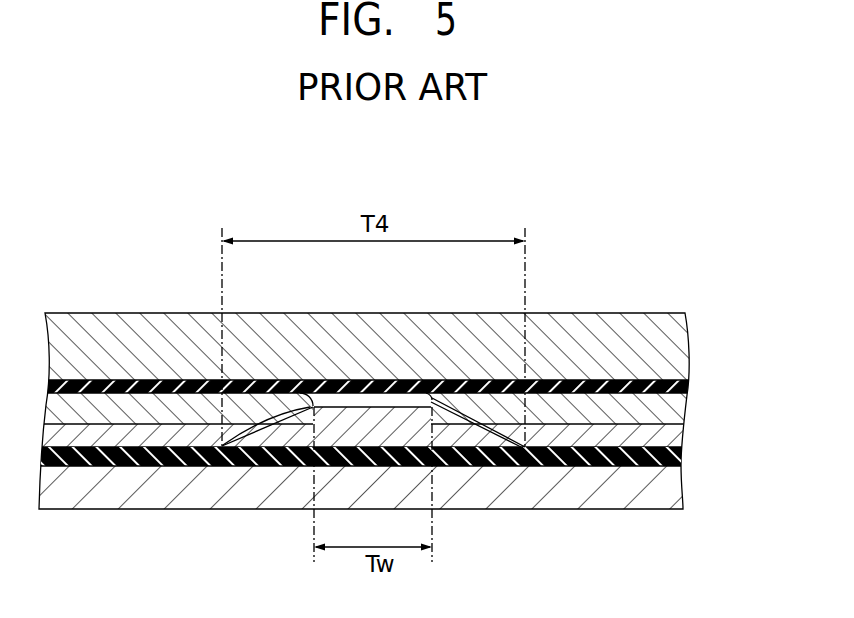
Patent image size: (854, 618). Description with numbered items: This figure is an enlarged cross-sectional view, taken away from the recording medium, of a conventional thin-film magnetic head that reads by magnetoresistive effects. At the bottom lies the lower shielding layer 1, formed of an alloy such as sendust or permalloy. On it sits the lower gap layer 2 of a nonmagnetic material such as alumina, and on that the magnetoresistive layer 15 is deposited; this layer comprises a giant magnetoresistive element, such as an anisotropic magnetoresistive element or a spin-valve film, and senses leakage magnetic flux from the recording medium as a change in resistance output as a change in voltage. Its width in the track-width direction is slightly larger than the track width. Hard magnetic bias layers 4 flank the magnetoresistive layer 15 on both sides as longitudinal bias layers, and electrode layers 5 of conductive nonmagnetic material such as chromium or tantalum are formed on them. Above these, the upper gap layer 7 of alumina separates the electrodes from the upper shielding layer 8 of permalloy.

The lower shielding layer 1 is at (663, 492).
The lower gap layer 2 is at (680, 461).
The hard magnetic bias layers 4 is at (663, 438).
The electrode layers 5 is at (665, 410).
The upper gap layer 7 is at (683, 385).
The upper shielding layer 8 is at (662, 353).
The magnetoresistive layer 15 is at (376, 418).